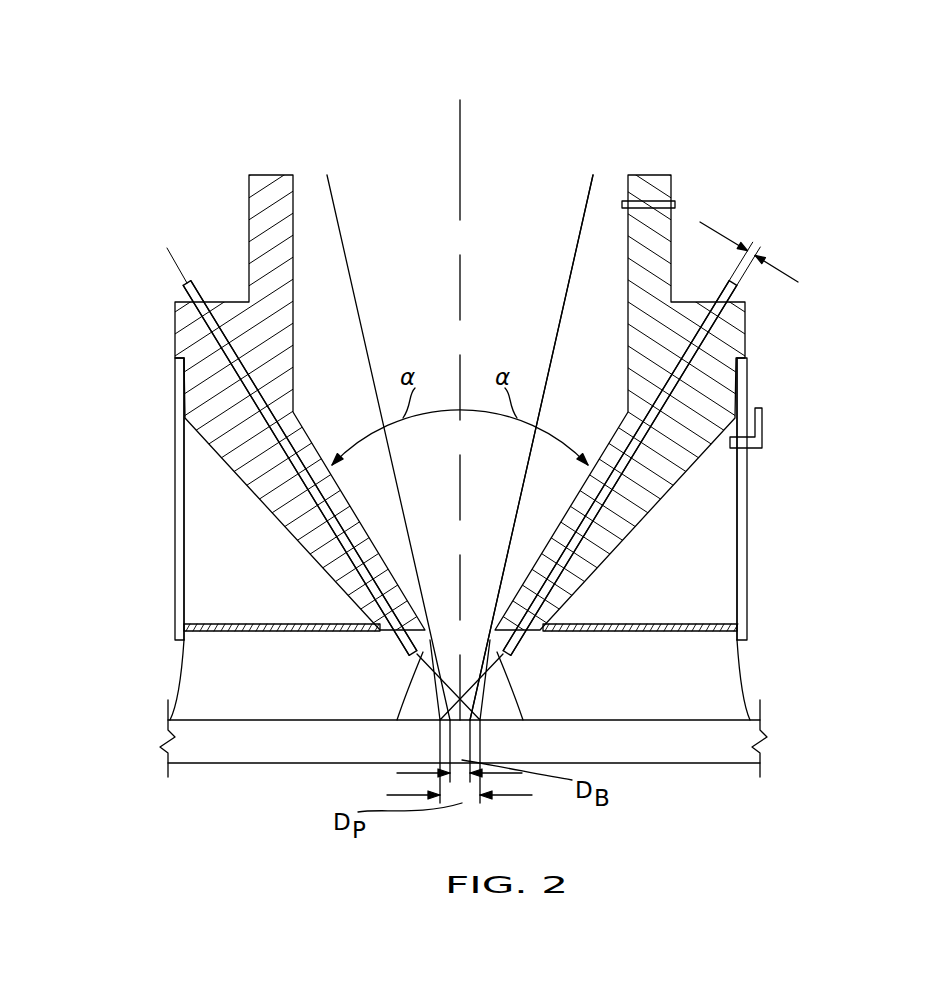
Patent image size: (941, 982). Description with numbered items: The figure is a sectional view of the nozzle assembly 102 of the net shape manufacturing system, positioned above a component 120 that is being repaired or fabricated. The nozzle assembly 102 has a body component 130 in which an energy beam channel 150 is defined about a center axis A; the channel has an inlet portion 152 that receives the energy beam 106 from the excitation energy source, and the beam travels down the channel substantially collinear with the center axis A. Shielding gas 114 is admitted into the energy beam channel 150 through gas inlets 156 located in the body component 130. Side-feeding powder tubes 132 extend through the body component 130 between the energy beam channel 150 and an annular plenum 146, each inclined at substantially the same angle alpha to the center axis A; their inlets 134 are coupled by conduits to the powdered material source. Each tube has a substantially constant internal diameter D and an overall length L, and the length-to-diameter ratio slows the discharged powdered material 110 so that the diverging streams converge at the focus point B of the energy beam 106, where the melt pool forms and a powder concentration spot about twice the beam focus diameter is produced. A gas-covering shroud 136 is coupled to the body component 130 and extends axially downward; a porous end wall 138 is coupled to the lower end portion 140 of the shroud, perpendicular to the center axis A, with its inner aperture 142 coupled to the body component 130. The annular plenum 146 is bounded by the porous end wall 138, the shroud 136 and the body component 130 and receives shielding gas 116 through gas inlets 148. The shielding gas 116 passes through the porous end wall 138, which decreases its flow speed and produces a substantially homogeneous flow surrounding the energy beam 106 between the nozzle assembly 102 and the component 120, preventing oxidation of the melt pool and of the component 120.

The nozzle assembly 102 is at (818, 103).
The energy beam 106 is at (572, 270).
The powdered material 110 is at (415, 660).
The shielding gas 114 is at (510, 705).
The shielding gas 116 is at (748, 680).
The component 120 is at (746, 756).
The body component 130 is at (175, 337).
The side-feeding powder tubes 132 is at (238, 337).
The inlets 134 is at (185, 272).
The gas-covering shroud 136 is at (748, 522).
The porous end wall 138 is at (657, 633).
The lower end portion 140 is at (158, 656).
The inner aperture 142 is at (380, 633).
The annular plenum 146 is at (215, 553).
The gas inlets 148 is at (765, 412).
The energy beam channel 150 is at (307, 188).
The inlet portion 152 is at (630, 175).
The gas inlets 156 is at (680, 203).
The center axis A is at (462, 117).
The focus point B is at (455, 735).
The internal diameter D is at (760, 247).
The overall length L is at (747, 334).